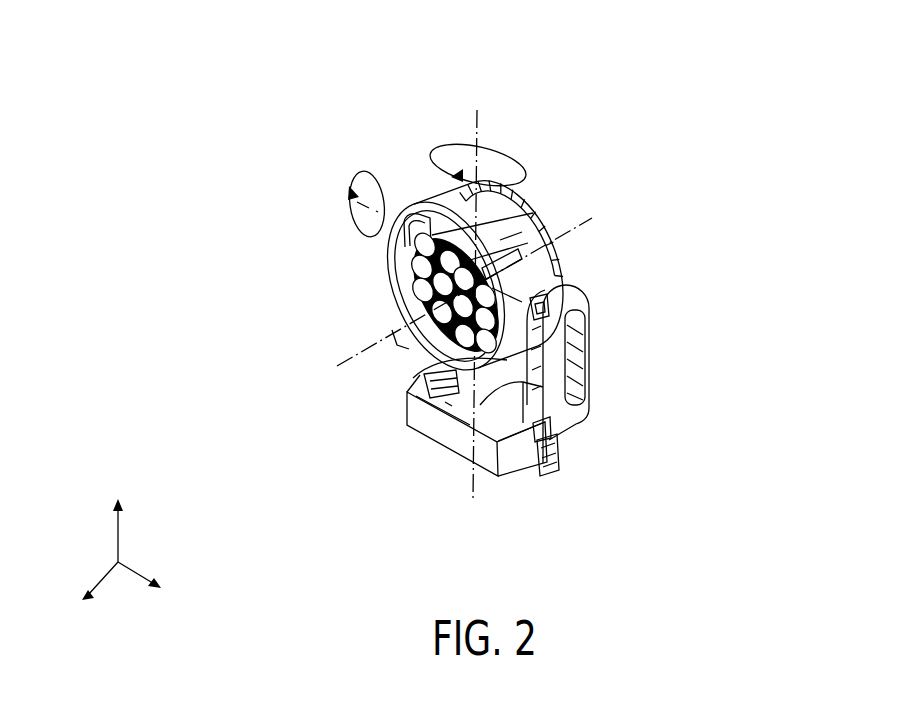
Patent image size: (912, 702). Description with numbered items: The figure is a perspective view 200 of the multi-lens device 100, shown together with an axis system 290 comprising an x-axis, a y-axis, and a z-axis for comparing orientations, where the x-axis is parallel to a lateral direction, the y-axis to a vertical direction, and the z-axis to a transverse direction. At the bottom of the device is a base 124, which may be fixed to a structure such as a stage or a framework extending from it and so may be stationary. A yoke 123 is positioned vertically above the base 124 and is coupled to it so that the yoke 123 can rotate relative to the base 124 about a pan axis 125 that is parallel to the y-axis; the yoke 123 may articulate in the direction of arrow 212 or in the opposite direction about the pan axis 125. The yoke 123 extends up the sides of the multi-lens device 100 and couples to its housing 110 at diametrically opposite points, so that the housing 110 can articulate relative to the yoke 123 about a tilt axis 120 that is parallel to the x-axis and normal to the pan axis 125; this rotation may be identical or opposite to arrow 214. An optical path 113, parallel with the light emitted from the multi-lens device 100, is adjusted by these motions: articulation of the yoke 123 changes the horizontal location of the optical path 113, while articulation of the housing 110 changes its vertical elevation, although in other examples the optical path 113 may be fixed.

The perspective view 200 is at (801, 43).
The multi-lens device 100 is at (624, 157).
The housing 110 is at (458, 228).
The optical path 113 is at (380, 340).
The tilt axis 120 is at (597, 347).
The yoke 123 is at (530, 407).
The base 124 is at (427, 414).
The pan axis 125 is at (476, 488).
The arrow 212 is at (528, 174).
The arrow 214 is at (365, 172).
The axis system 290 is at (158, 499).